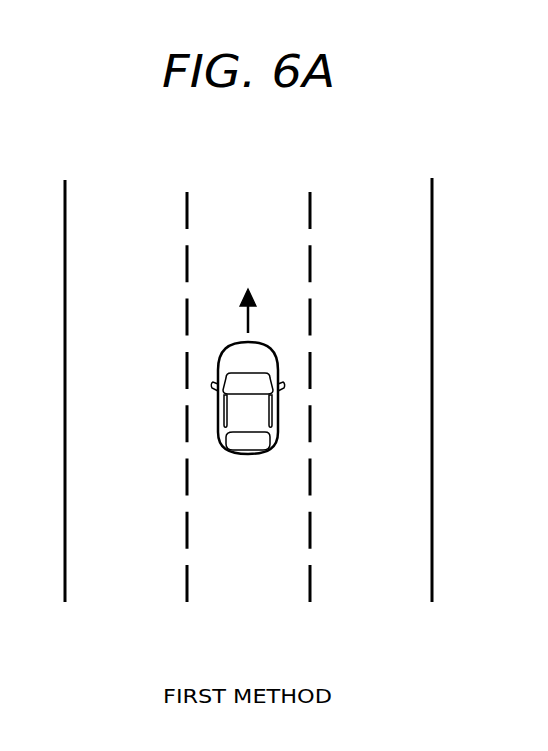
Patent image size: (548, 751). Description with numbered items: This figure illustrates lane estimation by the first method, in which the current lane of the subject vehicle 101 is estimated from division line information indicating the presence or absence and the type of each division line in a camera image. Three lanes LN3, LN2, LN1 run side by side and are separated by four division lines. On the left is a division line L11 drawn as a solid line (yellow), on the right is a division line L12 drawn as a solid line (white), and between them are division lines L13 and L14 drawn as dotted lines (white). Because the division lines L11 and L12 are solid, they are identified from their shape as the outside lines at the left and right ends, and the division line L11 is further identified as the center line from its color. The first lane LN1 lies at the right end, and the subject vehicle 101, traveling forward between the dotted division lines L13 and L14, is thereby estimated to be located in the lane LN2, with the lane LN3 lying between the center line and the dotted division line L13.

The division line L11 is at (65, 591).
The division line L12 is at (432, 591).
The division line L13 is at (187, 591).
The division line L14 is at (310, 591).
The first lane LN1 is at (378, 198).
The lane LN2 is at (262, 197).
The lane LN3 is at (128, 197).
The subject vehicle 101 is at (277, 403).